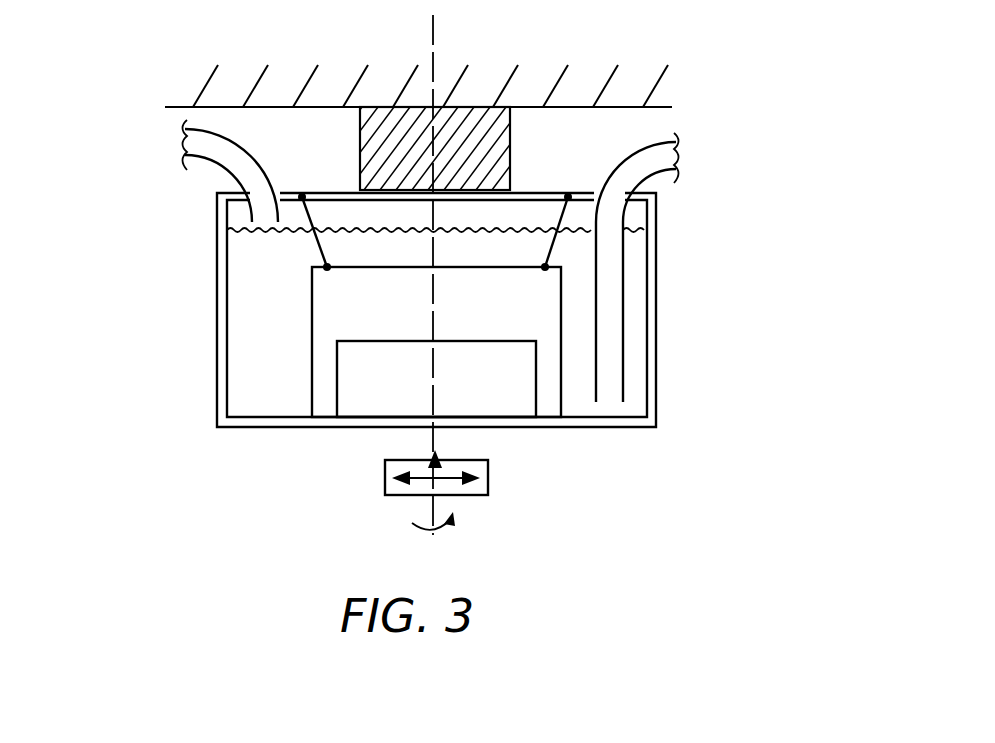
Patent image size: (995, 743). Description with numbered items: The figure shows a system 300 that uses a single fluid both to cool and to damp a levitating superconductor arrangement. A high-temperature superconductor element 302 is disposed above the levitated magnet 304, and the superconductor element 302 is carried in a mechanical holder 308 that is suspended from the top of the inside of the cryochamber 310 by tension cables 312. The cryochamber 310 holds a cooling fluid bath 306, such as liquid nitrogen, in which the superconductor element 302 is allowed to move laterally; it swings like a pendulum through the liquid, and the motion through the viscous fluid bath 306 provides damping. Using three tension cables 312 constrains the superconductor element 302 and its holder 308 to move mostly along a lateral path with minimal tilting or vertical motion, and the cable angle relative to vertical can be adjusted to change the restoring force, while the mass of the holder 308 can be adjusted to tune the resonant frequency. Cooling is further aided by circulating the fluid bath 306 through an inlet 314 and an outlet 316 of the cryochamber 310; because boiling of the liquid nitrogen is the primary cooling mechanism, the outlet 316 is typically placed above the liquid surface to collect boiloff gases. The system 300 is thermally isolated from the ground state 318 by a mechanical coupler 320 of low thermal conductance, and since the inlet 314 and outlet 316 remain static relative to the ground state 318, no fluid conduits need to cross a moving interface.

The system 300 is at (735, 45).
The high-temperature superconductor element 302 is at (380, 405).
The levitated magnet 304 is at (407, 495).
The cooling fluid bath 306 is at (237, 342).
The mechanical holder 308 is at (545, 407).
The cryochamber 310 is at (217, 282).
The tension cables 312 is at (583, 238).
The inlet 314 is at (710, 140).
The outlet 316 is at (175, 140).
The ground state 318 is at (165, 107).
The mechanical coupler 320 is at (468, 118).